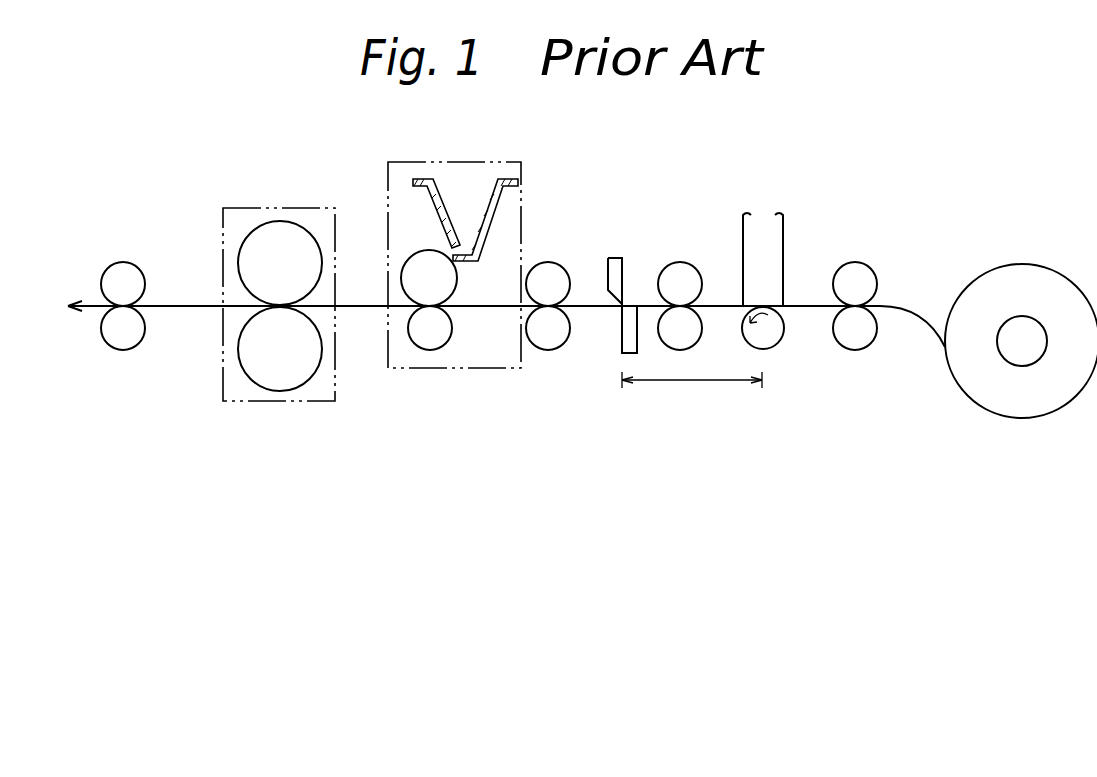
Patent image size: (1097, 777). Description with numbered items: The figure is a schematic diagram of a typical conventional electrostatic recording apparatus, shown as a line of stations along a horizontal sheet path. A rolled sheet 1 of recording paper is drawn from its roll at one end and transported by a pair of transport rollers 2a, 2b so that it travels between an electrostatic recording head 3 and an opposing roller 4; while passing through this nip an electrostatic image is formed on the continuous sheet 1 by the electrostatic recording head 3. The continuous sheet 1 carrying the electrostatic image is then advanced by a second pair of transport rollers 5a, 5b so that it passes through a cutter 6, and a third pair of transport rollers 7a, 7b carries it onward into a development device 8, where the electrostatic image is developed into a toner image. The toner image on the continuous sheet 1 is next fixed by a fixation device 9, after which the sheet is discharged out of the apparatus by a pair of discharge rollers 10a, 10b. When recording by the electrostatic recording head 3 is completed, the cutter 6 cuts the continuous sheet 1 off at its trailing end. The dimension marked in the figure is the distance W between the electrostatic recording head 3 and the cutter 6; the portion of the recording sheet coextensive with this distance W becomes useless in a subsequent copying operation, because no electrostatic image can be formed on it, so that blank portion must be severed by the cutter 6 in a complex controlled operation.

The rolled sheet of recording paper 1 is at (1030, 285).
The transport roller 2a is at (852, 275).
The transport roller 2b is at (863, 333).
The electrostatic recording head 3 is at (775, 265).
The roller 4 is at (770, 337).
The transport roller 5a is at (687, 277).
The transport roller 5b is at (693, 325).
The cutter 6 is at (615, 267).
The transport roller 7a is at (548, 278).
The transport roller 7b is at (560, 338).
The development device 8 is at (485, 362).
The fixation device 9 is at (315, 393).
The discharge roller 10a is at (128, 273).
The discharge roller 10b is at (132, 332).
The distance between the electrostatic recording head and the cutter W is at (685, 383).